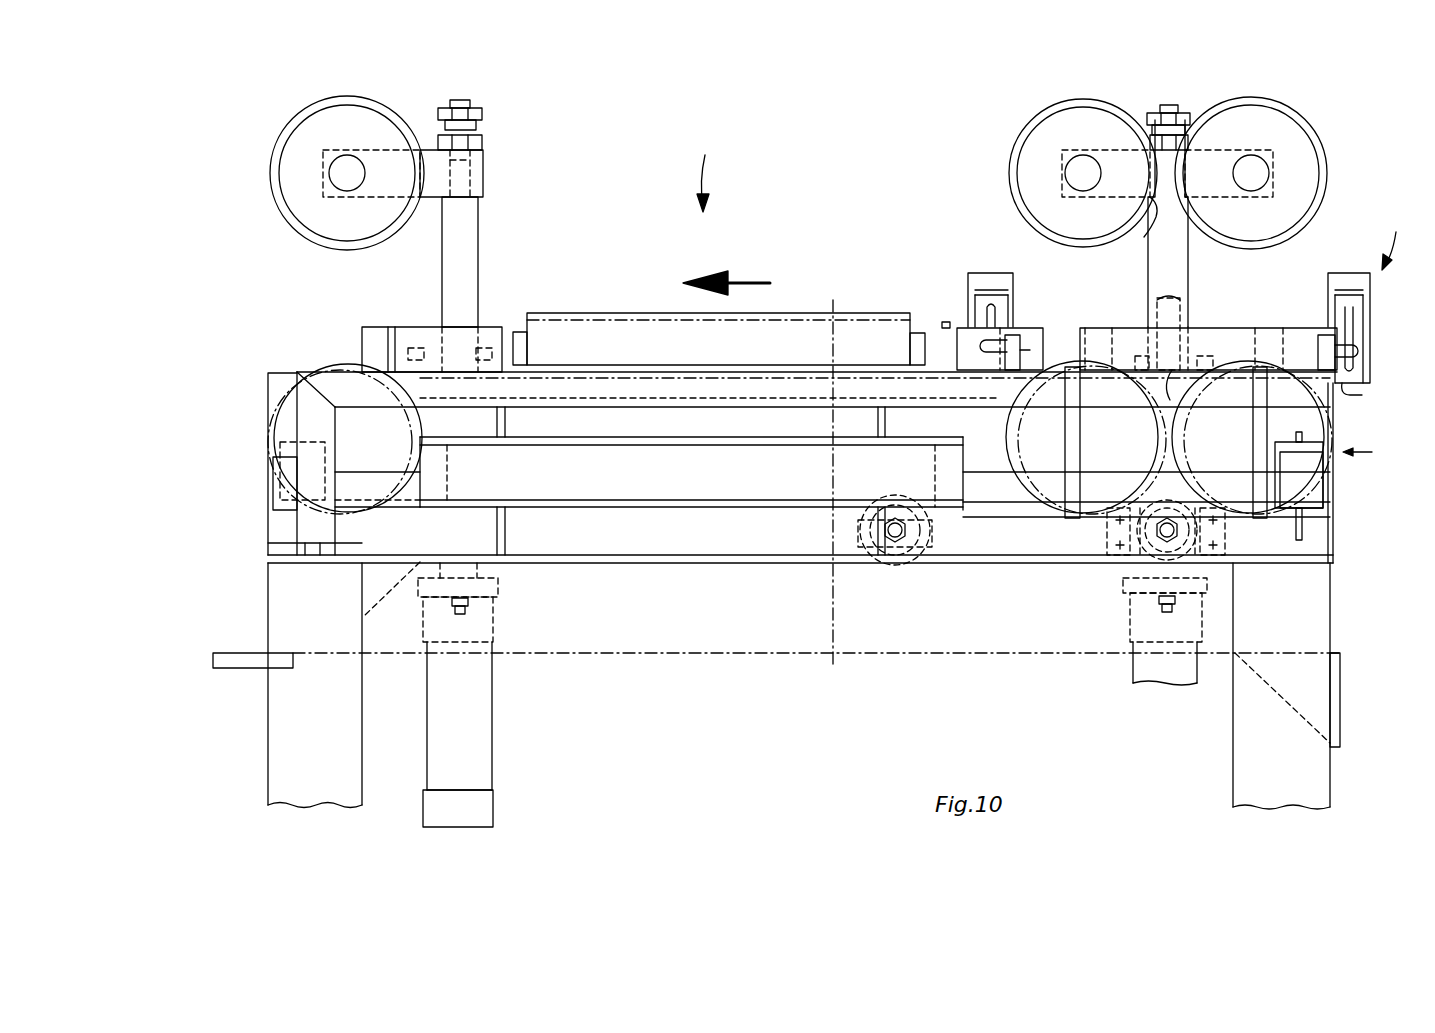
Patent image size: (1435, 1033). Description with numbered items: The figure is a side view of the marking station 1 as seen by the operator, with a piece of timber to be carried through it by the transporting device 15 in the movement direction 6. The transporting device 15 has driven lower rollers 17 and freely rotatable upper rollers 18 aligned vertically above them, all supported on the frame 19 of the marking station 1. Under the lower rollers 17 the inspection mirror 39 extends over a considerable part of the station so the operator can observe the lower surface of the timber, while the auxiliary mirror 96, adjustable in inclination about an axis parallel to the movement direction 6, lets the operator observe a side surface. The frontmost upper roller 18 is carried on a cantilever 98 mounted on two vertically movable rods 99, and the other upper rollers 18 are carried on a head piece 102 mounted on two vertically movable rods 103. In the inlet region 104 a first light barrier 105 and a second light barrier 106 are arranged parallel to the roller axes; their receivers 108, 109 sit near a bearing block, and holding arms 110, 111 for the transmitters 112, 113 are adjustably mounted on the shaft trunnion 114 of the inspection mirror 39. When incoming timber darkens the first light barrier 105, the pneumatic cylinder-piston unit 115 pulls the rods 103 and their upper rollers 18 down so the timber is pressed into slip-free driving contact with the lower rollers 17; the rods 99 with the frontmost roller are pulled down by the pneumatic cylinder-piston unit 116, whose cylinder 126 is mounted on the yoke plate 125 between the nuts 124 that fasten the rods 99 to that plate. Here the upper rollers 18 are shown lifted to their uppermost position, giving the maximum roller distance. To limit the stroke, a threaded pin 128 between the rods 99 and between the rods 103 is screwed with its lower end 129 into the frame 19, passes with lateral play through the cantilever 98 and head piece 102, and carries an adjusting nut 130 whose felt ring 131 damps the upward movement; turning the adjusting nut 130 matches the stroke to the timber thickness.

The marking station 1 is at (708, 171).
The movement direction 6 is at (757, 280).
The transporting device 15 is at (1374, 452).
The lower rollers 17 is at (285, 393).
The upper rollers 18 is at (283, 212).
The frame 19 is at (1340, 622).
The inspection mirror 39 is at (628, 435).
The auxiliary mirror 96 is at (607, 325).
The cantilever 98 is at (485, 187).
The rods 99 is at (480, 262).
The head piece 102 is at (1148, 230).
The rods 103 is at (1190, 270).
The inlet region 104 is at (1403, 238).
The first light barrier 105 is at (1378, 310).
The second light barrier 106 is at (1016, 296).
The receiver 108 is at (1362, 395).
The receiver 109 is at (995, 317).
The holding arm 110 is at (1285, 378).
The holding arm 111 is at (1058, 382).
The transmitter 112 is at (1360, 348).
The transmitter 113 is at (978, 345).
The shaft trunnion 114 is at (960, 510).
The pneumatic cylinder-piston unit 115 is at (1125, 673).
The pneumatic cylinder-piston unit 116 is at (497, 672).
The nut 124 is at (470, 604).
The yoke plate 125 is at (498, 590).
The cylinder 126 is at (427, 700).
The threaded pin 128 is at (466, 108).
The lower end 129 is at (1175, 375).
The adjusting nut 130 is at (484, 114).
The felt ring 131 is at (484, 146).